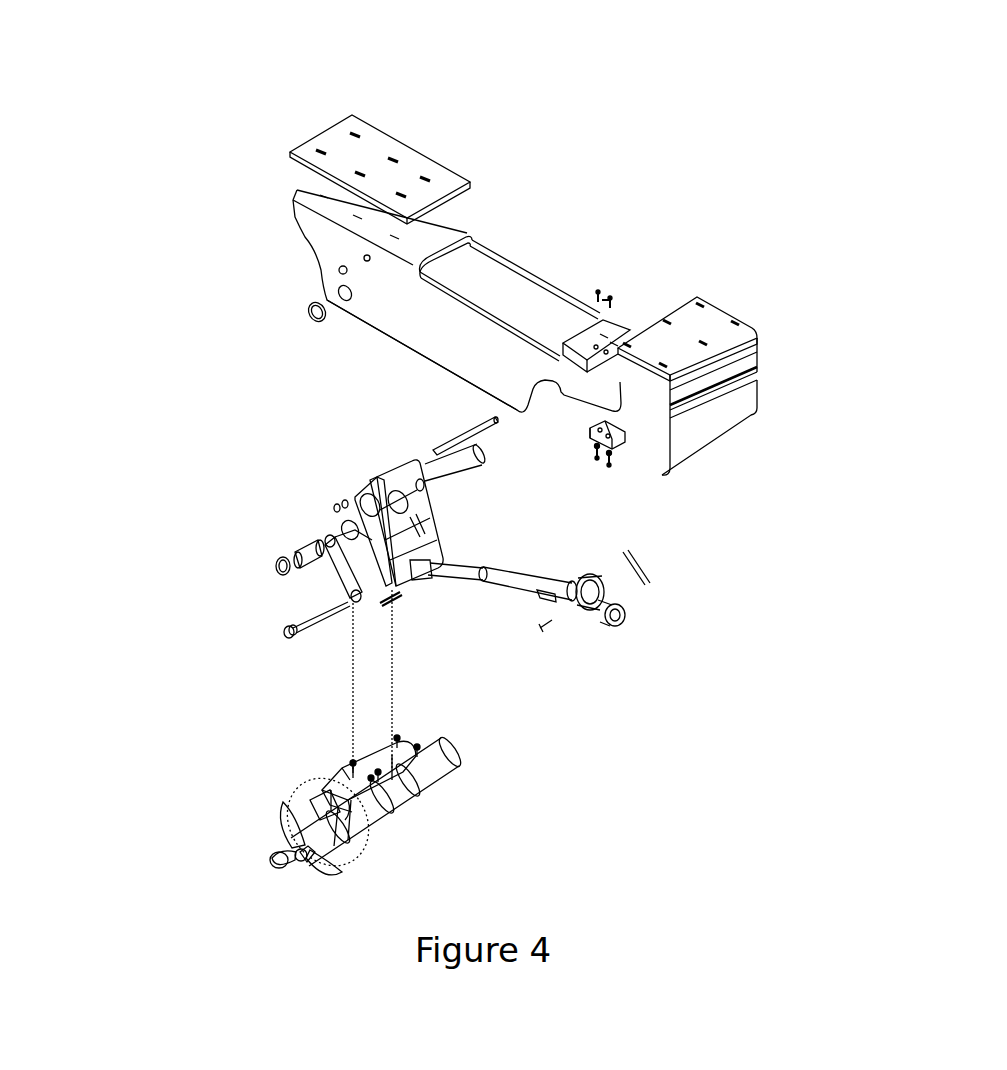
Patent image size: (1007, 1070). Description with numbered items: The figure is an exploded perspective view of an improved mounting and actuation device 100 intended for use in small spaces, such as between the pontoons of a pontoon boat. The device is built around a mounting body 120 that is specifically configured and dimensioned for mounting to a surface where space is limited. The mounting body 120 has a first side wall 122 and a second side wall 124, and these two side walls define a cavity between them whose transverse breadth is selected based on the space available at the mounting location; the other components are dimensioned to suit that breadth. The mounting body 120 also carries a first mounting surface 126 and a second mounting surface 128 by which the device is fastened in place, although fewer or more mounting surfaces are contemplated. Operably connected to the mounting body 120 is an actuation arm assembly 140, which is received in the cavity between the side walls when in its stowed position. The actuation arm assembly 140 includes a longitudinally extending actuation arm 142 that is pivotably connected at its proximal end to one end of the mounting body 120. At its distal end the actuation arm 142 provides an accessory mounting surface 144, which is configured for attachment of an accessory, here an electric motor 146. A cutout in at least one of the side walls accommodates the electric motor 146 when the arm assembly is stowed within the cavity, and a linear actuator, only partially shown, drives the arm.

The mounting and actuation device 100 is at (628, 186).
The mounting body 120 is at (630, 253).
The first side wall 122 is at (510, 298).
The second side wall 124 is at (422, 355).
The first mounting surface 126 is at (712, 312).
The second mounting surface 128 is at (385, 145).
The actuation arm assembly 140 is at (214, 611).
The actuation arm 142 is at (372, 716).
The accessory mounting surface 144 is at (418, 775).
The electric motor 146 is at (400, 797).